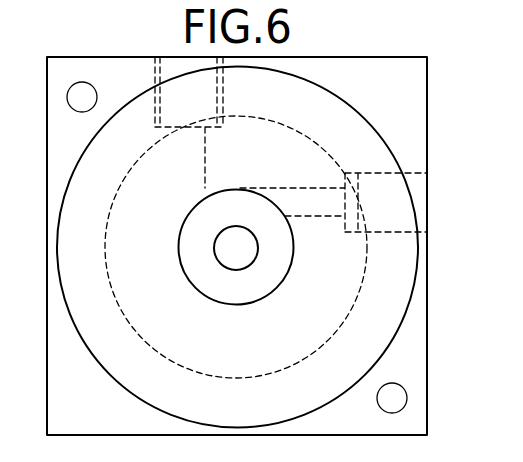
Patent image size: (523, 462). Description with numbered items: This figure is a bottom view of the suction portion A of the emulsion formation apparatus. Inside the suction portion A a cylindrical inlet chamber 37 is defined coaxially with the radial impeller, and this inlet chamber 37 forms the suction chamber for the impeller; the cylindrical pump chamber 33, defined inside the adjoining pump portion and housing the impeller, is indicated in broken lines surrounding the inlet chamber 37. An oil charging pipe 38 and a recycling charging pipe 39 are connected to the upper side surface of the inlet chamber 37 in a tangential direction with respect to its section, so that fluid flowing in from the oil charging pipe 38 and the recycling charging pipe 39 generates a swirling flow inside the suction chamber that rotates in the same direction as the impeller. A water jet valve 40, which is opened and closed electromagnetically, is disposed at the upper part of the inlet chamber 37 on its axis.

The suction portion A is at (407, 122).
The pump chamber 33 is at (348, 320).
The inlet chamber 37 is at (222, 305).
The oil charging pipe 38 is at (393, 222).
The recycling charging pipe 39 is at (222, 100).
The water jet valve 40 is at (241, 255).